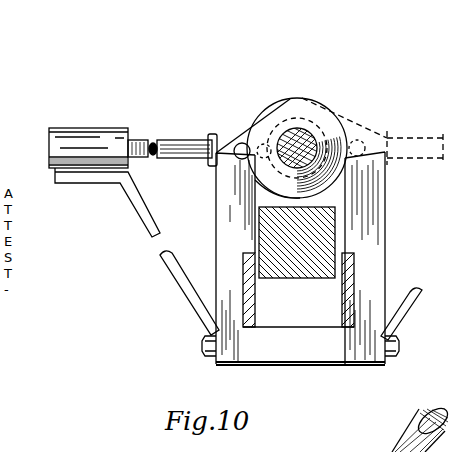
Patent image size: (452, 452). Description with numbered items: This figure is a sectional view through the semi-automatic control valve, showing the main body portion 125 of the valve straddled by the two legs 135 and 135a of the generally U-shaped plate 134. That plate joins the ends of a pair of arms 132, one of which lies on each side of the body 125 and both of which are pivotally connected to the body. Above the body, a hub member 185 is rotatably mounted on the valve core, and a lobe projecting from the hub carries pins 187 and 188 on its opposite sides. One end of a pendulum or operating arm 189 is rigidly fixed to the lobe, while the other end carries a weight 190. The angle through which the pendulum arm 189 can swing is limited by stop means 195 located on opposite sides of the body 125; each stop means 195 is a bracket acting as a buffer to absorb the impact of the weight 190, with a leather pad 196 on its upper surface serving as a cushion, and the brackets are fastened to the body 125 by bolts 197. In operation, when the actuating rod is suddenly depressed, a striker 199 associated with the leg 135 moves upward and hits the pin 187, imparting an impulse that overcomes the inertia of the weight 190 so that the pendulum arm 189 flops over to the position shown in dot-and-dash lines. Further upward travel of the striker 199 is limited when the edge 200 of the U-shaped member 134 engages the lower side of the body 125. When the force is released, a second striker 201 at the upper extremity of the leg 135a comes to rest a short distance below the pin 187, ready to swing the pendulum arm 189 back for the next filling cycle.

The main body portion 125 is at (272, 256).
The arms 132 is at (243, 270).
The U-shaped plate 134 is at (276, 352).
The leg 135 is at (233, 206).
The leg 135a is at (378, 204).
The hub member 185 is at (293, 106).
The pin 187 is at (243, 142).
The pin 188 is at (262, 143).
The pendulum or operating arm 189 is at (184, 142).
The weight 190 is at (75, 138).
The stop means 195 is at (164, 262).
The leather pad 196 is at (55, 170).
The bolts 197 is at (203, 345).
The striker 199 is at (225, 148).
The edge 200 is at (273, 327).
The second striker 201 is at (370, 158).